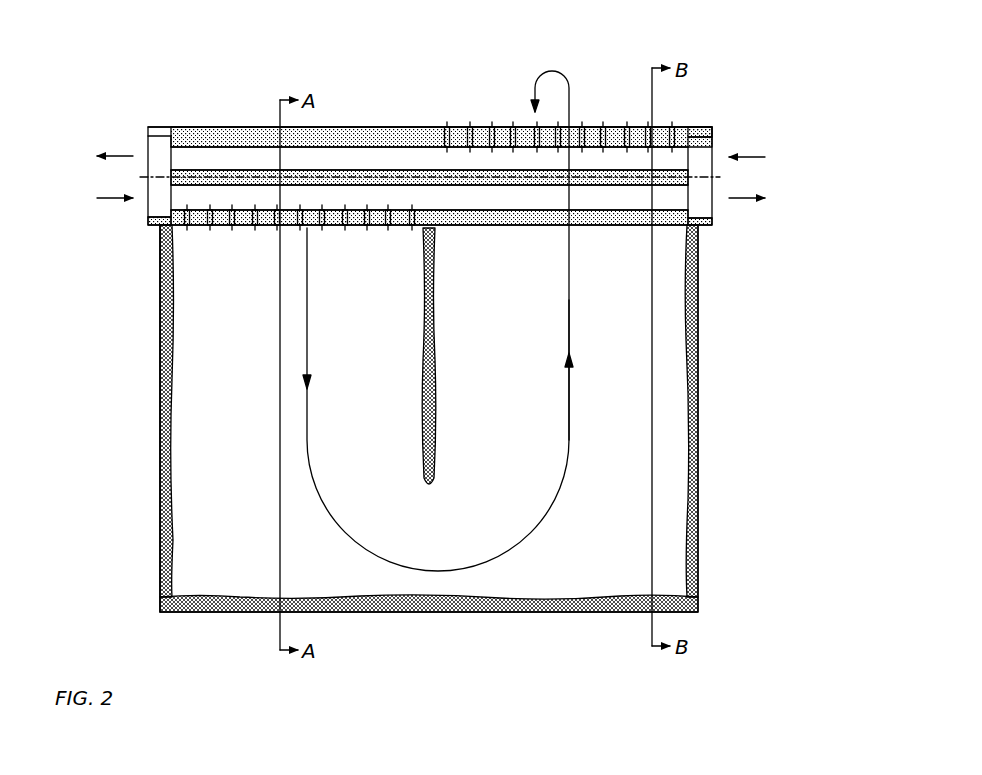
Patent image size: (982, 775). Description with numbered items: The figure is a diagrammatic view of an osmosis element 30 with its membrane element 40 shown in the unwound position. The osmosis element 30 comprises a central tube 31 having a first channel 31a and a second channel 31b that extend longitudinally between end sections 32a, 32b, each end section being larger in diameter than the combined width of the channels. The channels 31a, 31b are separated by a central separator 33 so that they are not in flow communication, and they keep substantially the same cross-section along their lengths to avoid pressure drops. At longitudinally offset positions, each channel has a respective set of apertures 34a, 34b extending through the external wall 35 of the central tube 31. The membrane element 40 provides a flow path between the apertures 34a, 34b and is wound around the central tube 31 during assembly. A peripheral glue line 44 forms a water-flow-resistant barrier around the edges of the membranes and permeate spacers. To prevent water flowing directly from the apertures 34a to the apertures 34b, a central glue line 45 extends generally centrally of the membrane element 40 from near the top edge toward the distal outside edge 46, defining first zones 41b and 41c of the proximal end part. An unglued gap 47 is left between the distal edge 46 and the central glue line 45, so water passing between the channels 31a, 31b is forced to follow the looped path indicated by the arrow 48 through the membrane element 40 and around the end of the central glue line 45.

The osmosis element 30 is at (431, 103).
The central tube 31 is at (243, 133).
The first channel 31a is at (673, 197).
The second channel 31b is at (673, 155).
The end section 32a is at (152, 146).
The end section 32b is at (712, 137).
The central separator 33 is at (690, 168).
The apertures 34a is at (213, 232).
The apertures 34b is at (577, 130).
The external wall 35 is at (362, 130).
The membrane element 40 is at (160, 408).
The first zone 41b is at (200, 337).
The first zone 41c is at (660, 332).
The peripheral glue line 44 is at (160, 488).
The central glue line 45 is at (425, 480).
The distal outside edge 46 is at (527, 602).
The unglued gap 47 is at (445, 555).
The arrow 48 is at (333, 522).